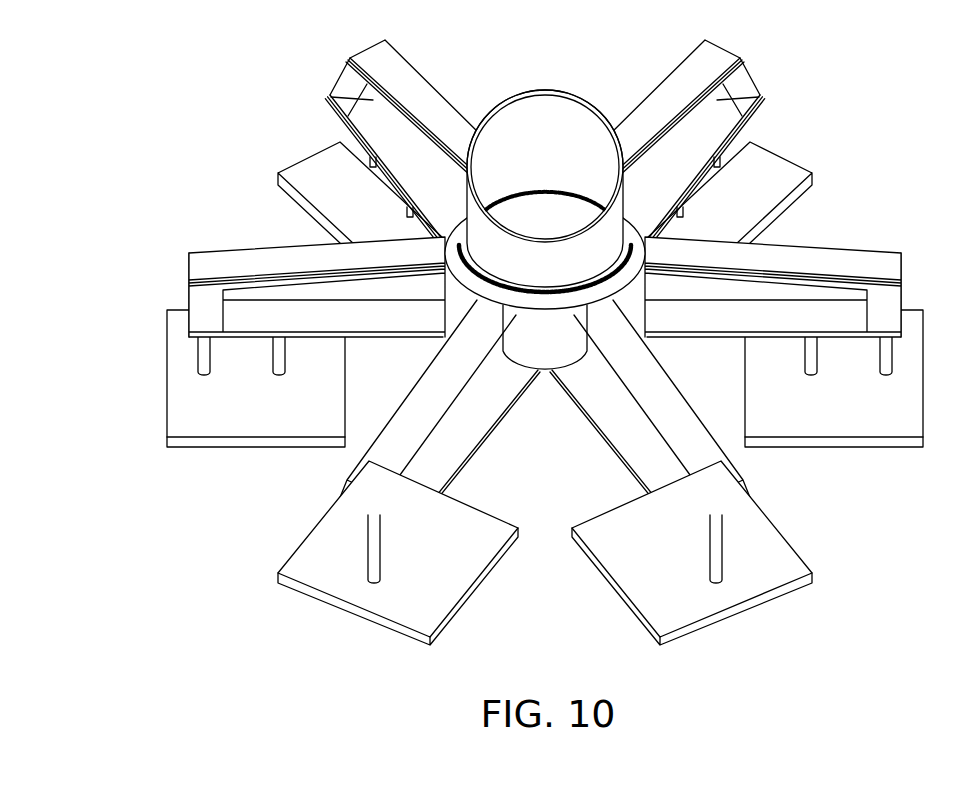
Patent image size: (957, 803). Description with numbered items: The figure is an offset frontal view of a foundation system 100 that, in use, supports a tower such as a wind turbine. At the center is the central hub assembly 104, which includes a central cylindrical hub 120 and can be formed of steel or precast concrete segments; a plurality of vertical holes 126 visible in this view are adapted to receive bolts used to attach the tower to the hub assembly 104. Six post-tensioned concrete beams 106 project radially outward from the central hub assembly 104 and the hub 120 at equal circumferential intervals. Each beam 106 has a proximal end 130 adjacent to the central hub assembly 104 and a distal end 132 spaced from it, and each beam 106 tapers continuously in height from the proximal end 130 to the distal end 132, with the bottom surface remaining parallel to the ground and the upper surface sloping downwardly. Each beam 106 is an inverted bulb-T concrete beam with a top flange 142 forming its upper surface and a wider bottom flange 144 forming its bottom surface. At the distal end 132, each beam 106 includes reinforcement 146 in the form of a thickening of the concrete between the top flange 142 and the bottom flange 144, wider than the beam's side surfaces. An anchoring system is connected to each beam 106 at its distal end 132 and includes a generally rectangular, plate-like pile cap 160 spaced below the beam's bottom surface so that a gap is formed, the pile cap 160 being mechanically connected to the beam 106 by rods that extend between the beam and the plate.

The foundation system 100 is at (528, 340).
The central hub assembly 104 is at (634, 303).
The beam 106 is at (434, 88).
The central cylindrical hub 120 is at (545, 350).
The vertical holes 126 is at (478, 263).
The proximal end 130 is at (630, 268).
The distal end 132 is at (906, 283).
The top flange 142 is at (247, 260).
The bottom flange 144 is at (362, 118).
The reinforcement 146 is at (348, 88).
The pile cap 160 is at (187, 418).